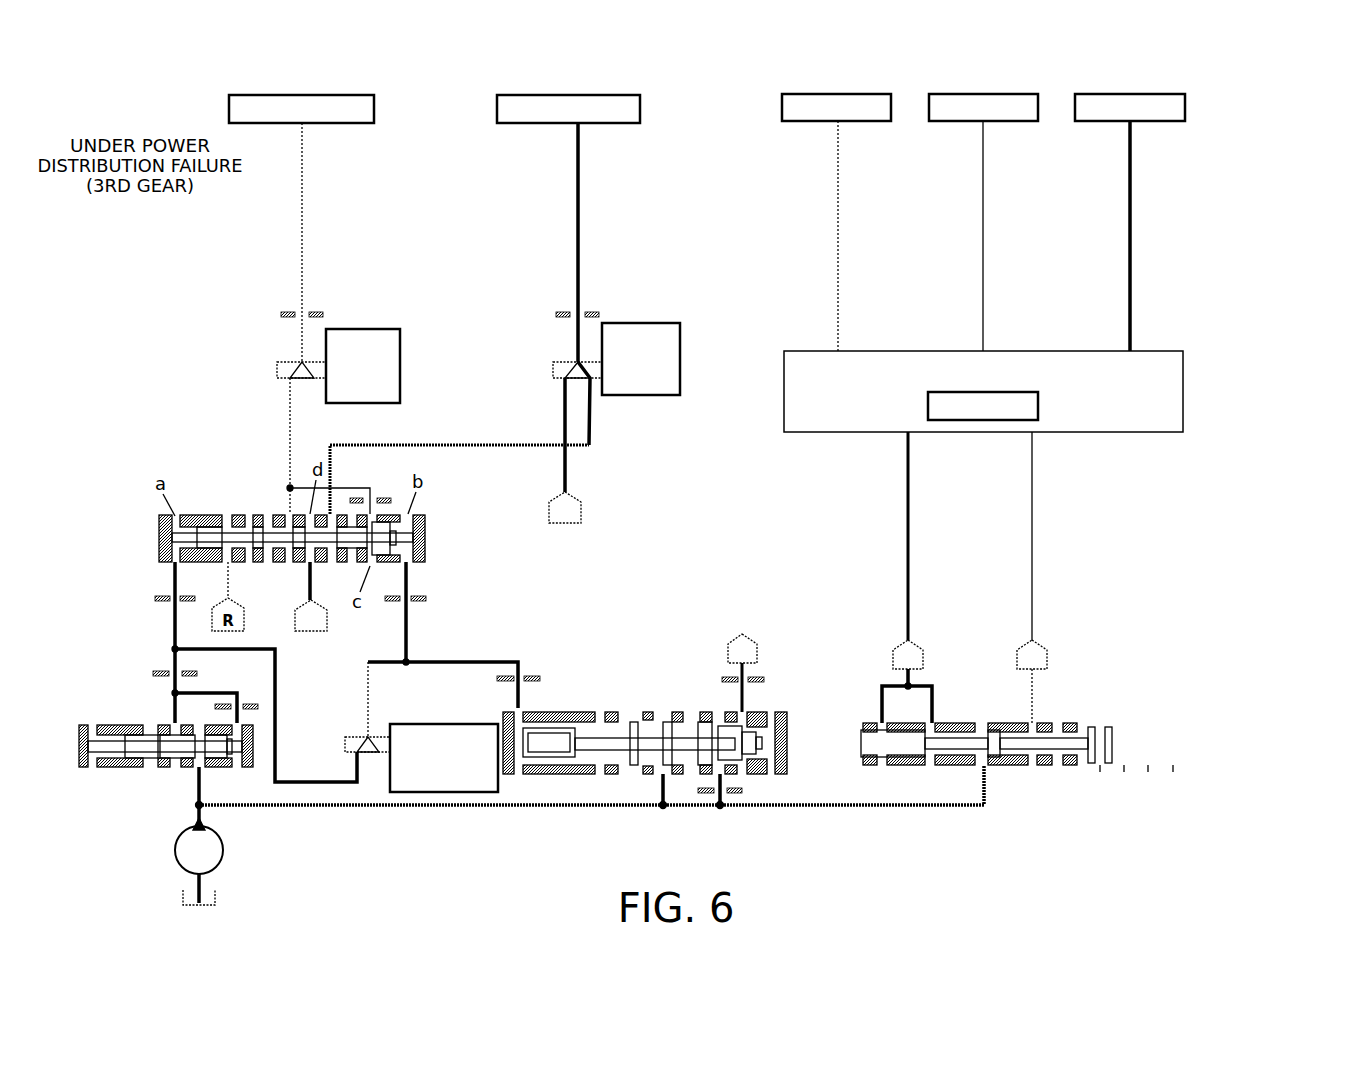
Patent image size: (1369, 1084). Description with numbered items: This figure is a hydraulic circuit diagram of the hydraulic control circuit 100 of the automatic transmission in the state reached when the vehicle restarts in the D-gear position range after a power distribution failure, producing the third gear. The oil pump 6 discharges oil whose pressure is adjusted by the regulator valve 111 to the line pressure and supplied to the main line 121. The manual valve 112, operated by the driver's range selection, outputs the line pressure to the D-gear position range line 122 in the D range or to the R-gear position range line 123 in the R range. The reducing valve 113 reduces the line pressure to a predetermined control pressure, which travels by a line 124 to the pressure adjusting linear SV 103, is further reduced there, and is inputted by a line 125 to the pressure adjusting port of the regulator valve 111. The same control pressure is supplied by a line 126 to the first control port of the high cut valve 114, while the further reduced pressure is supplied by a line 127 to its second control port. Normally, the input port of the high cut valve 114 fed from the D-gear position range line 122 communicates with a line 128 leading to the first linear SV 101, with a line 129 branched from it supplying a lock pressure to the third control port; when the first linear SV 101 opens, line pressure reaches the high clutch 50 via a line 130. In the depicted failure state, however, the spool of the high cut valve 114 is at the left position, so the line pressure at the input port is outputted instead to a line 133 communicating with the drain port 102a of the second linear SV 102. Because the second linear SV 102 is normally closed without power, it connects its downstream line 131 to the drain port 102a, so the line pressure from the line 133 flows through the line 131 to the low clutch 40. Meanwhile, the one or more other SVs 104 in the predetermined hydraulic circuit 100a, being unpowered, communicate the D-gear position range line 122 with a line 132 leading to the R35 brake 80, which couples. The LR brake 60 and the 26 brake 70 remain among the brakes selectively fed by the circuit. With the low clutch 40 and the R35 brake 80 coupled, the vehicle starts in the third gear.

The oil pump 6 is at (223, 846).
The low clutch 40 is at (612, 125).
The high clutch 50 is at (330, 125).
The LR brake 60 is at (870, 121).
The 26 brake 70 is at (1015, 121).
The R35 brake 80 is at (1160, 121).
The hydraulic control circuit 100 is at (1272, 210).
The predetermined hydraulic circuit 100a is at (1183, 383).
The first linear solenoid valve 101 is at (400, 368).
The second linear solenoid valve 102 is at (680, 363).
The drain port 102a is at (591, 392).
The pressure adjusting linear solenoid valve 103 is at (433, 722).
The other solenoid valves 104 is at (1038, 413).
The regulator valve 111 is at (782, 700).
The manual valve 112 is at (1115, 716).
The reducing valve 113 is at (124, 776).
The high cut valve 114 is at (438, 519).
The main line 121 is at (878, 806).
The D-gear position range line 122 is at (305, 586).
The R-gear position range line 123 is at (1033, 695).
The line 124 is at (277, 690).
The line 125 is at (475, 661).
The line 126 is at (170, 628).
The line 127 is at (410, 630).
The line 128 is at (290, 432).
The line 129 is at (343, 488).
The line 130 is at (302, 265).
The line 131 is at (578, 265).
The line 132 is at (1130, 260).
The line 133 is at (462, 445).